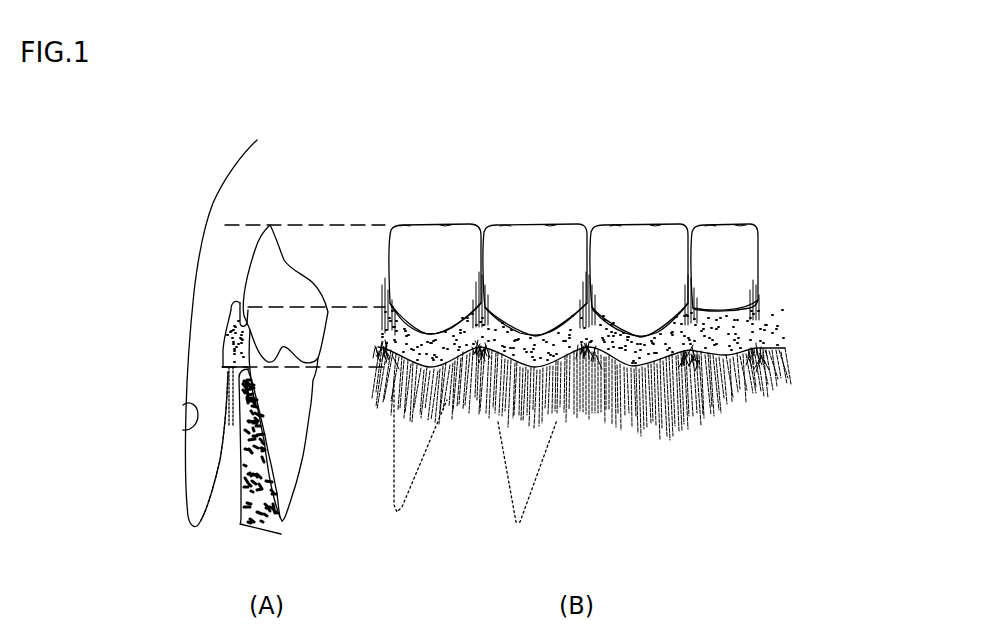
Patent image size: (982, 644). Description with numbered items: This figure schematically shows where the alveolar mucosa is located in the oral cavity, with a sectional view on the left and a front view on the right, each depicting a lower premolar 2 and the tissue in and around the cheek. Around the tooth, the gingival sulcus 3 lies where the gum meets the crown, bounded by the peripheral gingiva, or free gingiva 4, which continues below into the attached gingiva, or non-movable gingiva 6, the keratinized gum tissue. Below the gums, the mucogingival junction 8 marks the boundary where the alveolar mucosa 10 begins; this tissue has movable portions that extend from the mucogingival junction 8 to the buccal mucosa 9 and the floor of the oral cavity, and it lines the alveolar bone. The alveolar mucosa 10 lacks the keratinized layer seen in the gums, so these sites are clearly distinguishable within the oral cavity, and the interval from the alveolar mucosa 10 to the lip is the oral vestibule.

The lower premolar 2 is at (273, 243).
The gingival sulcus 3 is at (235, 285).
The peripheral gingiva (free gingiva) 4 is at (762, 310).
The attached gingiva (non-movable gingiva) 6 is at (228, 341).
The mucogingival junction 8 is at (222, 366).
The buccal mucosa 9 is at (183, 428).
The alveolar mucosa 10 is at (220, 443).